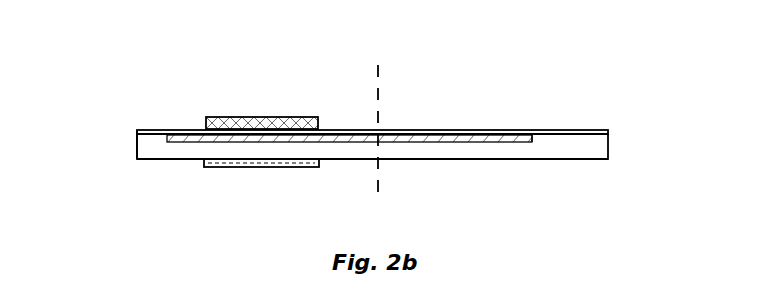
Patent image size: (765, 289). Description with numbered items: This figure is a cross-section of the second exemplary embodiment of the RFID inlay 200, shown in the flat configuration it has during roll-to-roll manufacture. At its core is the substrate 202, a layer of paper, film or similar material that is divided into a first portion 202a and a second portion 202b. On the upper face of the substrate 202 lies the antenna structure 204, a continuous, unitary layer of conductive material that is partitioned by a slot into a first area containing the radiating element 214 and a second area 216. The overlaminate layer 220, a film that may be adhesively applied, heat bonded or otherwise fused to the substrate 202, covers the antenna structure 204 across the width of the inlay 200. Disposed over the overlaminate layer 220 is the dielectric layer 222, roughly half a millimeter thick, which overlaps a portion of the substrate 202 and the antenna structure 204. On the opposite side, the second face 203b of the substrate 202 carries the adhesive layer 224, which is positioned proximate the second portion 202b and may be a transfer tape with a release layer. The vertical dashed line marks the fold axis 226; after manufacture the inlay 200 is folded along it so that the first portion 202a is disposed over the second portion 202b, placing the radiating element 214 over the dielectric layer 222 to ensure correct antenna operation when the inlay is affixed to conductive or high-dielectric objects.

The RFID inlay 200 is at (78, 56).
The substrate 202 is at (563, 152).
The first portion of substrate 202a is at (532, 227).
The second portion of substrate 202b is at (245, 212).
The second face of substrate 203b is at (163, 160).
The antenna structure 204 is at (480, 142).
The radiating element 214 is at (525, 129).
The second area of antenna structure 216 is at (347, 129).
The overlaminate layer 220 is at (607, 133).
The dielectric layer 222 is at (225, 123).
The adhesive layer 224 is at (310, 162).
The fold axis 226 is at (378, 98).